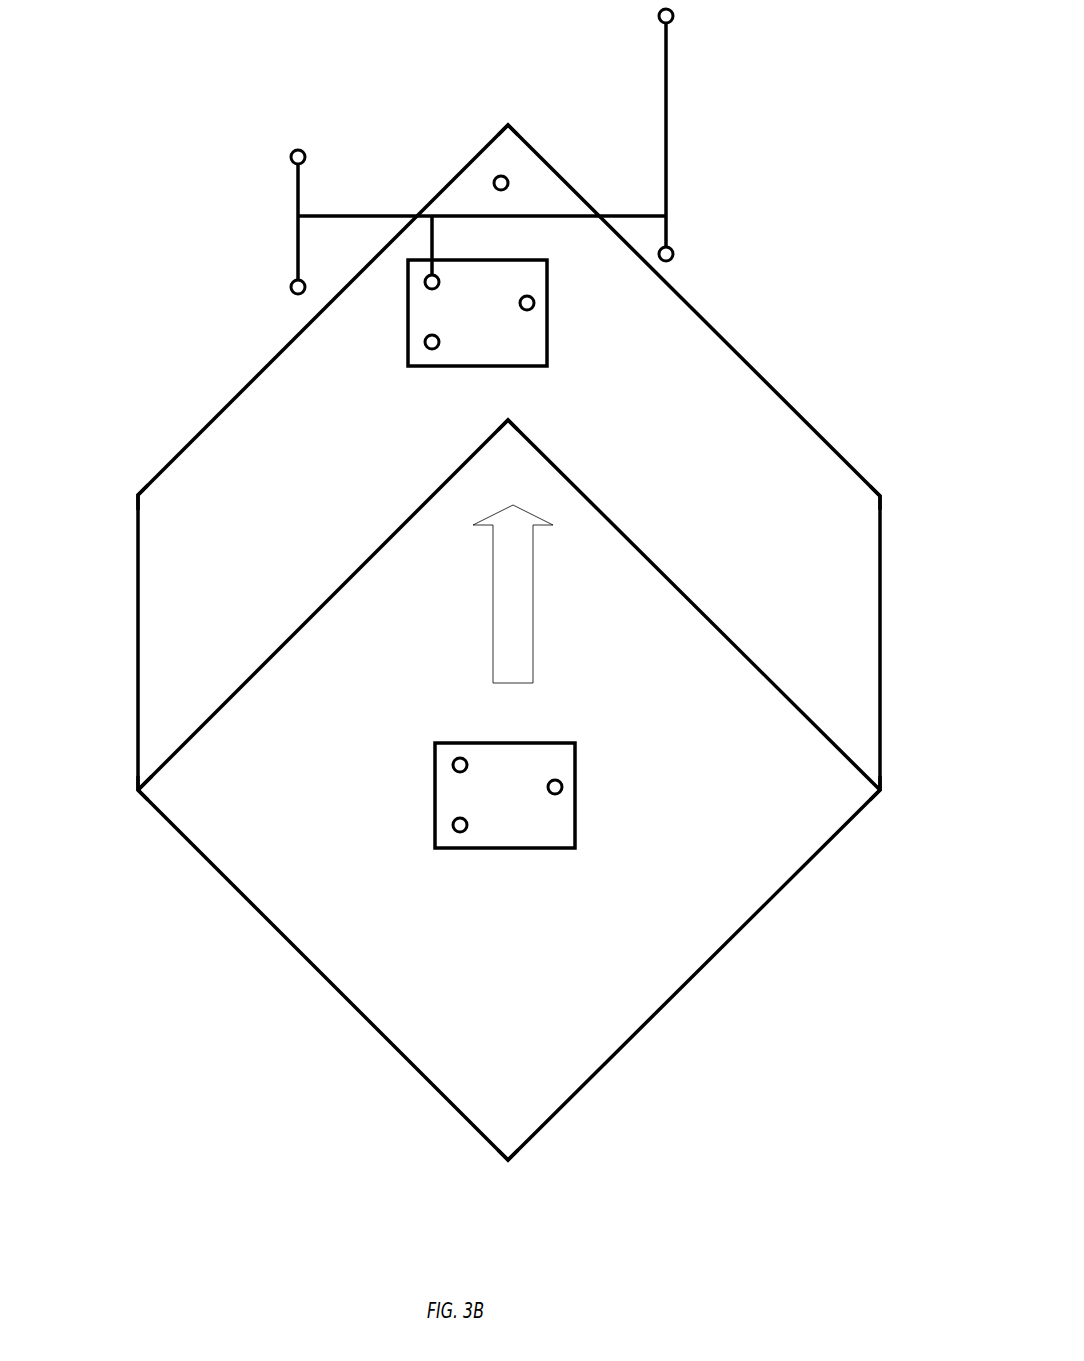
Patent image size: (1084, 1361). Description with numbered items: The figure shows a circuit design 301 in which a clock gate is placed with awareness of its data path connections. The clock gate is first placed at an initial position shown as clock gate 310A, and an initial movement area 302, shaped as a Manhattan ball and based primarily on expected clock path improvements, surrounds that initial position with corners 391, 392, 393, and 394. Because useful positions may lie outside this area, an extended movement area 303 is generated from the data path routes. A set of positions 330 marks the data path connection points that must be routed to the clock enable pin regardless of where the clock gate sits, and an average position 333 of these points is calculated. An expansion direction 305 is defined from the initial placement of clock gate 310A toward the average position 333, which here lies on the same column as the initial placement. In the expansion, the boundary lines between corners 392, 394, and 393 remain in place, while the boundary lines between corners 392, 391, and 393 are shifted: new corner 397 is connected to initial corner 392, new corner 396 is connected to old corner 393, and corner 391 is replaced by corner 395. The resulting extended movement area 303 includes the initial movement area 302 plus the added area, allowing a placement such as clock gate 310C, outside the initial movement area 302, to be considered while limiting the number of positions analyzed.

The circuit design 301 is at (106, 41).
The initial movement area 302 is at (278, 949).
The extended movement area 303 is at (728, 620).
The expansion direction 305 is at (513, 594).
The clock gate initial placement 310A is at (524, 864).
The clock gate placement outside initial movement area 310C is at (394, 368).
The set of positions for data path connection points 330 is at (645, 19).
The average position 333 is at (485, 170).
The corner 391 is at (493, 415).
The corner 392 is at (126, 777).
The corner 393 is at (225, 792).
The corner 394 is at (524, 1167).
The corner 395 is at (498, 110).
The corner 396 is at (895, 501).
The corner 397 is at (130, 480).